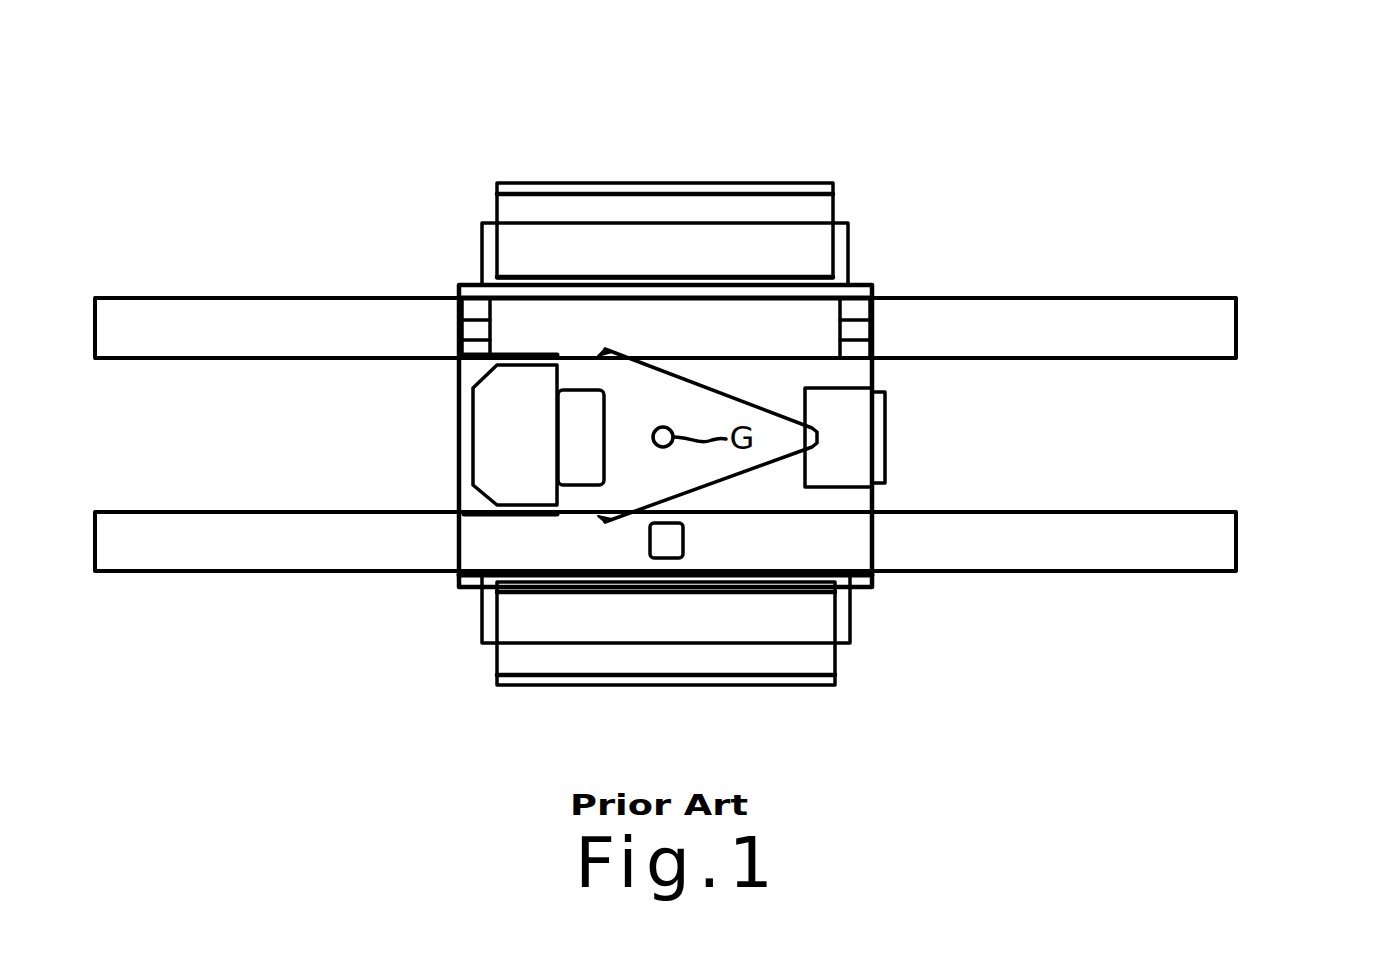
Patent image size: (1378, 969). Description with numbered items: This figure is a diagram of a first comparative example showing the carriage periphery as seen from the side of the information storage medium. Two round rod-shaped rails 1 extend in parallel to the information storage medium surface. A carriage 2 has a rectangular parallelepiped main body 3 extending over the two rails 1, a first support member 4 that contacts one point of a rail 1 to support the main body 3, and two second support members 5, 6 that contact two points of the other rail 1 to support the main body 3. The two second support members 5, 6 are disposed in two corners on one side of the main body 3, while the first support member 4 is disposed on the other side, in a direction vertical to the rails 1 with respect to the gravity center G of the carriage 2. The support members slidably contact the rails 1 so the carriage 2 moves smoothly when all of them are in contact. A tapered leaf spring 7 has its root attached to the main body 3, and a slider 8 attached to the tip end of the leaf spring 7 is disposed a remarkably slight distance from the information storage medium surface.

The rails 1 is at (1215, 532).
The carriage 2 is at (771, 160).
The main body 3 is at (459, 437).
The first support member 4 is at (673, 537).
The second support member 5 is at (482, 327).
The second support member 6 is at (846, 327).
The leaf spring 7 is at (617, 487).
The slider 8 is at (874, 448).